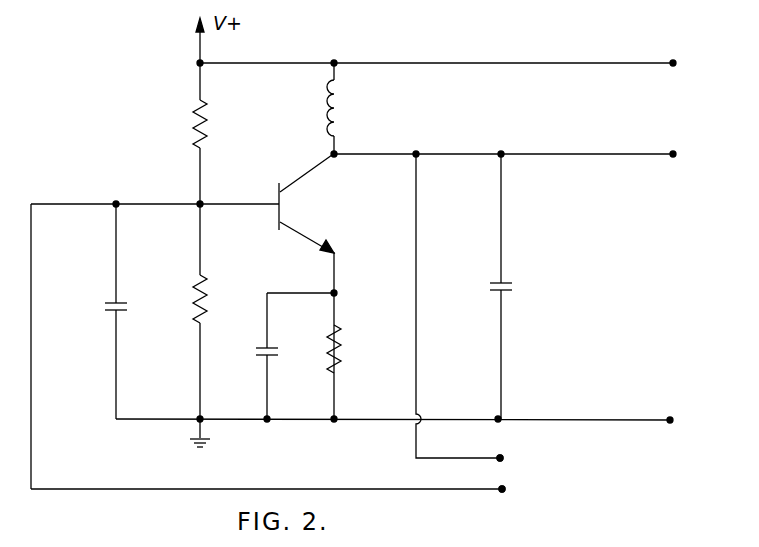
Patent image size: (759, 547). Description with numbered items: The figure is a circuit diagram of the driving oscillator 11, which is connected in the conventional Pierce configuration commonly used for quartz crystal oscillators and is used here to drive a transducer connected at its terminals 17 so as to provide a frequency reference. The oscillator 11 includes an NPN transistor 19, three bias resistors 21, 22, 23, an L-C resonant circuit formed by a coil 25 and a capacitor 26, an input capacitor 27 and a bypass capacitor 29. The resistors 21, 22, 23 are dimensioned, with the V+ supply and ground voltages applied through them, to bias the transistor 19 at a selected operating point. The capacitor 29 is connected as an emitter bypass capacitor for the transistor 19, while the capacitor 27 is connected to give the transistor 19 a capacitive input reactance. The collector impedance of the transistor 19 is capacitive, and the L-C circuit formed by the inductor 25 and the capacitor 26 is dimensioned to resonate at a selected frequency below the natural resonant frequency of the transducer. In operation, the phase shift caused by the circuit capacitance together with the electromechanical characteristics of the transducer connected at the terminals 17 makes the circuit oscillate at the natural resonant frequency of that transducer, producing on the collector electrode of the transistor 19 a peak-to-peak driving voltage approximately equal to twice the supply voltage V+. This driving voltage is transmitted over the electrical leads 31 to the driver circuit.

The driving oscillator 11 is at (113, 139).
The terminals 17 is at (504, 458).
The NPN transistor 19 is at (283, 196).
The bias resistor 21 is at (206, 123).
The bias resistor 22 is at (197, 283).
The bias resistor 23 is at (340, 350).
The coil 25 is at (342, 104).
The capacitor 26 is at (505, 283).
The input capacitor 27 is at (113, 302).
The bypass capacitor 29 is at (264, 347).
The electrical leads 31 is at (673, 63).